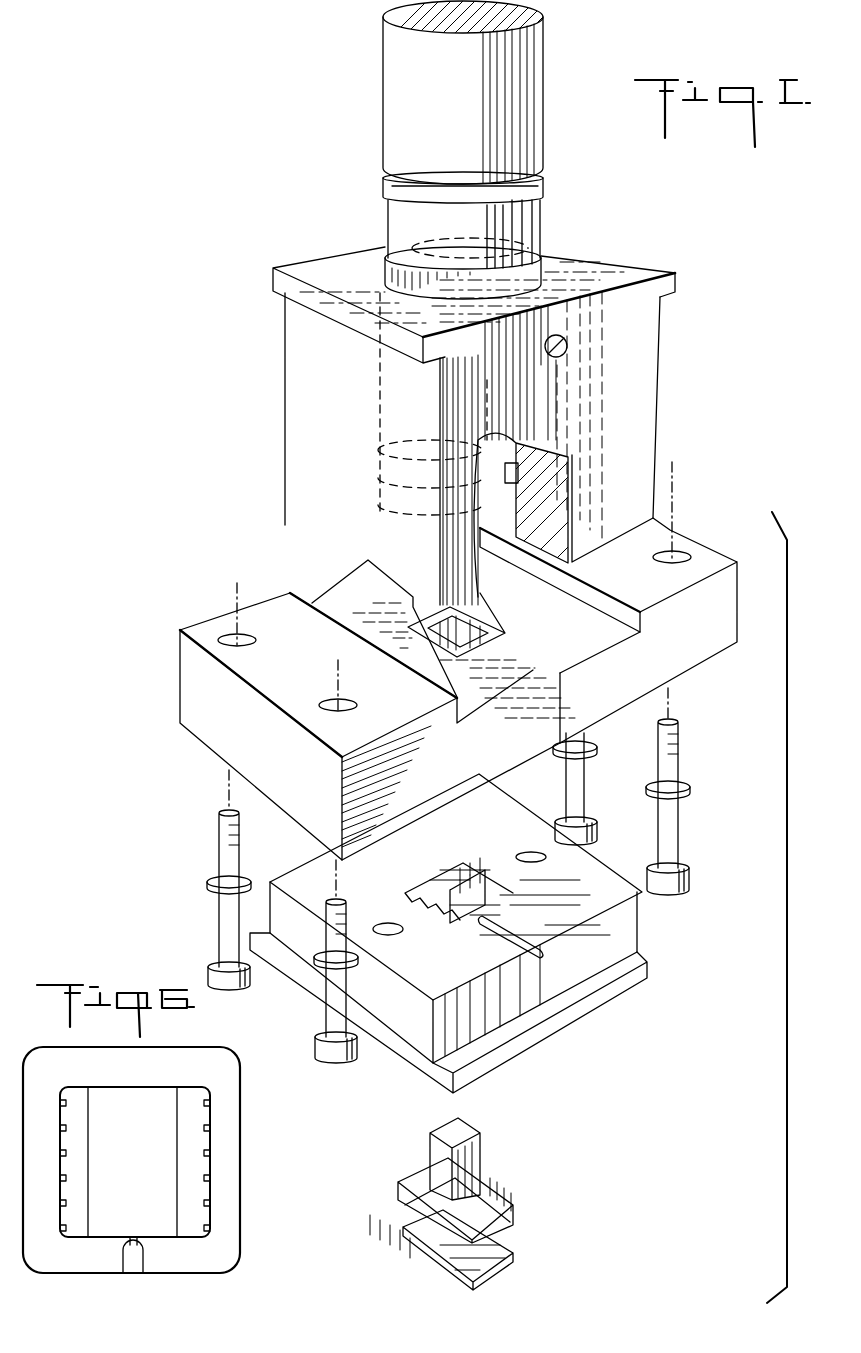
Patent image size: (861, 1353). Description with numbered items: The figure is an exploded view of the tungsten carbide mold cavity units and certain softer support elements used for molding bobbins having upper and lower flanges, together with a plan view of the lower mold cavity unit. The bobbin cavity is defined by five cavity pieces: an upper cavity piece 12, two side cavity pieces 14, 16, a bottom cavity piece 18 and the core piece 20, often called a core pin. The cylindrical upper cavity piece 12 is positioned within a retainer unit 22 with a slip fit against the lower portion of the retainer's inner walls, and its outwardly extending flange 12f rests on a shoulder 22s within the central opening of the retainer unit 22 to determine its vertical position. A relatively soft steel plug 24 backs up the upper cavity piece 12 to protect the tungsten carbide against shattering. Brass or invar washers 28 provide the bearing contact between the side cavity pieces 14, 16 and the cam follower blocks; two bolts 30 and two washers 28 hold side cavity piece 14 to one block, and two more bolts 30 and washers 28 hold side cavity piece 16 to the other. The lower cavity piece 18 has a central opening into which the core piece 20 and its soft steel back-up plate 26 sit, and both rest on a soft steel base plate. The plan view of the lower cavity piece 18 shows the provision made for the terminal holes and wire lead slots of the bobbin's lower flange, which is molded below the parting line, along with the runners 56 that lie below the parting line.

In FIG. 1, the steel plug 24 is at (545, 101).
In FIG. 1, the flange 12f is at (383, 192).
In FIG. 1, the upper cavity piece 12 is at (387, 229).
In FIG. 1, the retainer unit 22 is at (652, 417).
In FIG. 1, the shoulder 22s is at (382, 484).
In FIG. 1, the side cavity piece 16 is at (722, 648).
In FIG. 1, the side cavity piece 14 is at (213, 731).
In FIG. 1, the washers 28 is at (214, 884).
In FIG. 1, the bolts 30 is at (212, 968).
In FIG. 1, the bottom cavity piece 18 is at (633, 930).
In FIG. 6, the bottom cavity piece 18 is at (228, 1178).
In FIG. 1, the core piece 20 is at (477, 1150).
In FIG. 1, the back-up plate 26 is at (510, 1267).
In FIG. 6, the runners 56 is at (143, 1278).